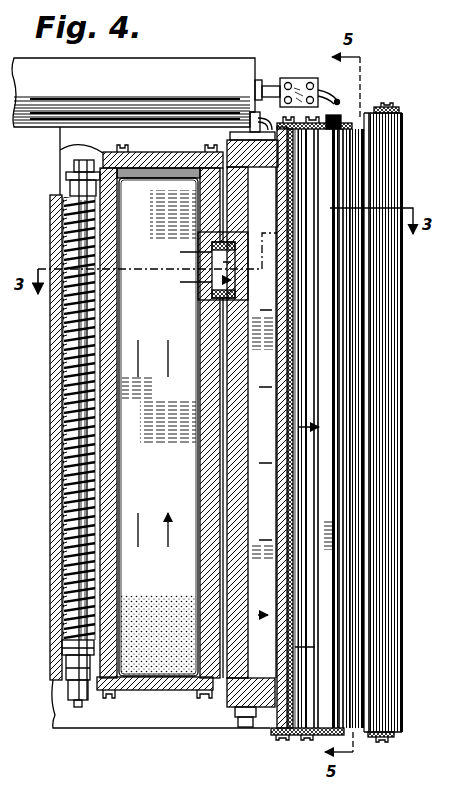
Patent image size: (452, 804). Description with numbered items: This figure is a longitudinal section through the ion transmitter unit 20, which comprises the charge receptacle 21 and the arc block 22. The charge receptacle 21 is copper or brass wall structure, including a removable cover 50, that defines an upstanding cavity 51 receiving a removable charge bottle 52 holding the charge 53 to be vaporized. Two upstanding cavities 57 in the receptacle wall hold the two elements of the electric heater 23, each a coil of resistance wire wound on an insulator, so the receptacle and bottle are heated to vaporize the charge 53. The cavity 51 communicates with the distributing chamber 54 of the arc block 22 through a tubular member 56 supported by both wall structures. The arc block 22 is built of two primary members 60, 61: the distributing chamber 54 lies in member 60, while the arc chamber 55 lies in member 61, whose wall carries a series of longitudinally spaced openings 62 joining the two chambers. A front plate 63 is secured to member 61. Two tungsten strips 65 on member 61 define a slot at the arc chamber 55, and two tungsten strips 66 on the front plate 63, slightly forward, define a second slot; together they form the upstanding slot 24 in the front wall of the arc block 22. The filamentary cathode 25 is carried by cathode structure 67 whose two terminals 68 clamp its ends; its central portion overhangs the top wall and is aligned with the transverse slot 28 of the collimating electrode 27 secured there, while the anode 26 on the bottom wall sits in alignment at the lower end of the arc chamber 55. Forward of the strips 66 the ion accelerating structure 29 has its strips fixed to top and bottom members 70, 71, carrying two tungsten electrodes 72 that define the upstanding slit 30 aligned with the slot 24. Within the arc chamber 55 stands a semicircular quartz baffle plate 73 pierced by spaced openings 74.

The ion transmitter unit 20 is at (28, 376).
The charge receptacle 21 is at (47, 407).
The arc block 22 is at (217, 453).
The electric heater 23 is at (65, 502).
The upstanding slot 24 is at (334, 365).
The filamentary cathode 25 is at (326, 92).
The anode 26 is at (323, 733).
The collimating electrode 27 is at (336, 133).
The transverse slot 28 is at (334, 128).
The ion accelerating structure 29 is at (381, 744).
The upstanding slit 30 is at (361, 662).
The removable cover 50 is at (60, 150).
The upstanding cavity 51 is at (120, 170).
The charge bottle 52 is at (113, 243).
The charge 53 is at (130, 643).
The distributing chamber 54 is at (269, 588).
The arc chamber 55 is at (317, 613).
The tubular member 56 is at (197, 280).
The upstanding cavities 57 is at (50, 563).
The primary member 60 is at (220, 707).
The primary member 61 is at (284, 558).
The openings 62 is at (284, 470).
The front plate 63 is at (349, 508).
The upstanding strips 65 is at (334, 303).
The upstanding strips 66 is at (451, 331).
The cathode structure 67 is at (190, 60).
The terminals 68 is at (294, 82).
The top member 70 is at (400, 112).
The bottom member 71 is at (393, 735).
The electrodes 72 is at (377, 700).
The baffle plate 73 is at (304, 262).
The openings 74 is at (306, 200).